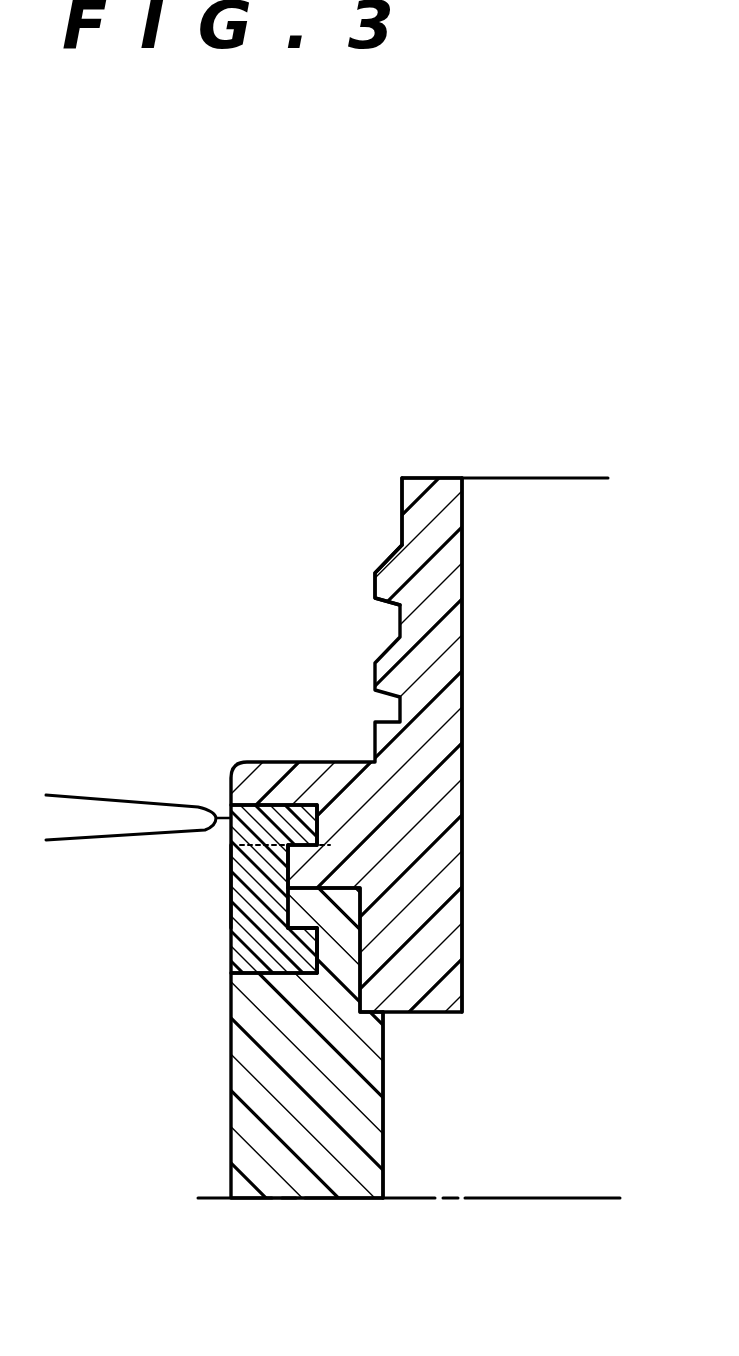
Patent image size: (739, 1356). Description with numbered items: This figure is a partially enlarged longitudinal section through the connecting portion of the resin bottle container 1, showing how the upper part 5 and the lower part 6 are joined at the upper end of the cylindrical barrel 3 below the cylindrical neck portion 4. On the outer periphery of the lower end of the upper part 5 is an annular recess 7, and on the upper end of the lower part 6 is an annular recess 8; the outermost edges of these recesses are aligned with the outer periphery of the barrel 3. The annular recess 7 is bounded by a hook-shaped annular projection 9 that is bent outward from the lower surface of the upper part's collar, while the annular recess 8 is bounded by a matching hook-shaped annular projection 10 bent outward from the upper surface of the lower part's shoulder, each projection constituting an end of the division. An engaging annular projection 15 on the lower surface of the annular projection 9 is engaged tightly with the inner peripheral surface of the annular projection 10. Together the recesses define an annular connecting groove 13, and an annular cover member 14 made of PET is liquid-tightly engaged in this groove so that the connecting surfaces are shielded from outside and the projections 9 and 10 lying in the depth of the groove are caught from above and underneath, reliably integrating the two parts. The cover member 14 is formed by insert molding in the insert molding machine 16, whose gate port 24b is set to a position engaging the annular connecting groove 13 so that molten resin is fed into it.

The bottle container 1 is at (296, 367).
The cylindrical barrel 3 is at (383, 1113).
The cylindrical neck portion 4 is at (402, 505).
The upper part 5 is at (433, 478).
The lower part 6 is at (230, 1106).
The annular recess 7 is at (310, 812).
The annular recess 8 is at (318, 940).
The hook-shaped annular projection 9 is at (290, 845).
The hook-shaped annular projection 10 is at (295, 916).
The annular connecting groove 13 is at (250, 867).
The annular cover member 14 is at (240, 903).
The engaging annular projection 15 is at (463, 821).
The insert molding machine 16 is at (378, 572).
The gate port 24b is at (188, 805).